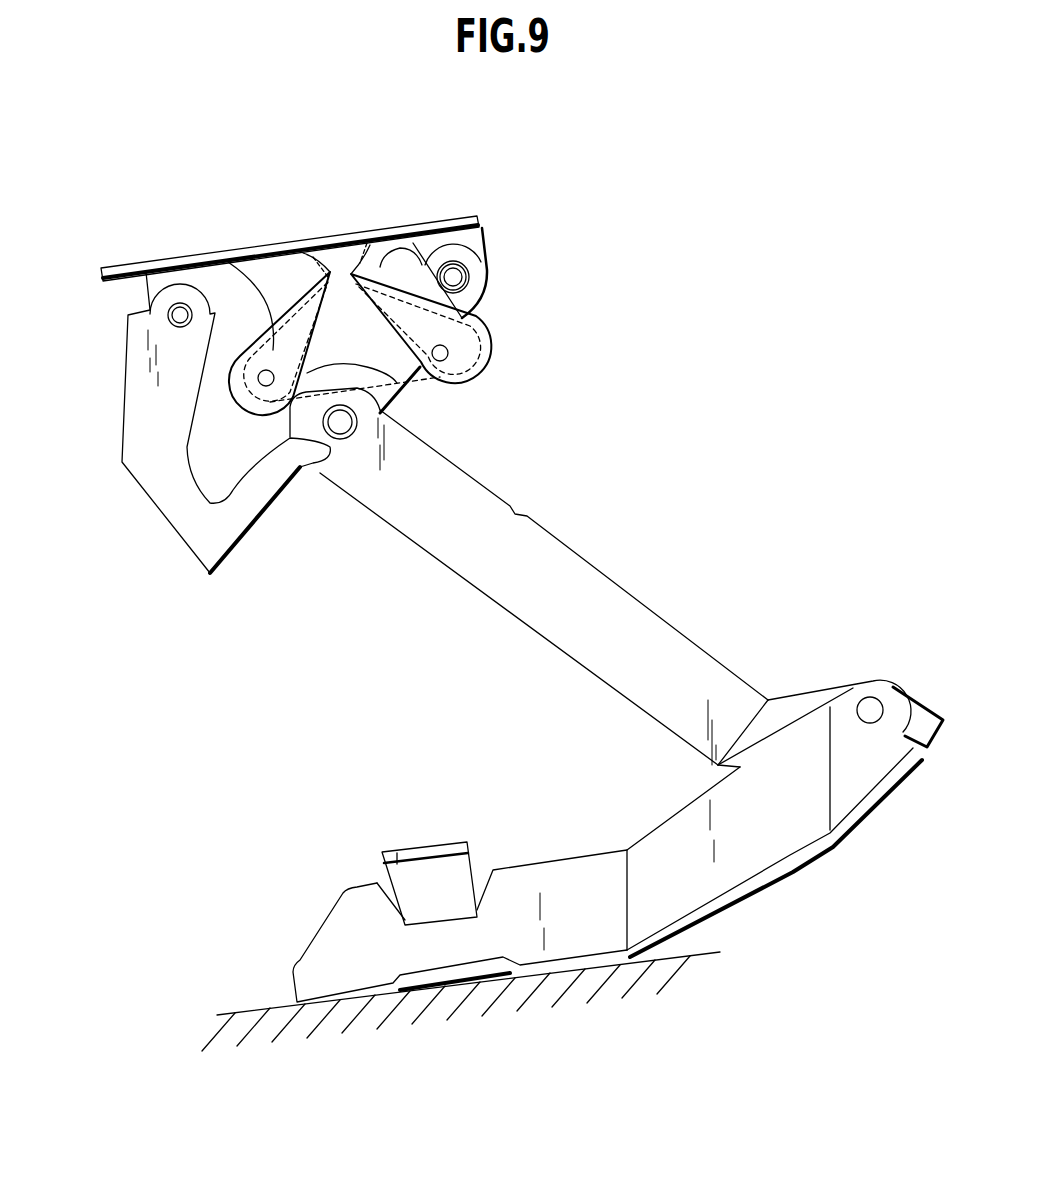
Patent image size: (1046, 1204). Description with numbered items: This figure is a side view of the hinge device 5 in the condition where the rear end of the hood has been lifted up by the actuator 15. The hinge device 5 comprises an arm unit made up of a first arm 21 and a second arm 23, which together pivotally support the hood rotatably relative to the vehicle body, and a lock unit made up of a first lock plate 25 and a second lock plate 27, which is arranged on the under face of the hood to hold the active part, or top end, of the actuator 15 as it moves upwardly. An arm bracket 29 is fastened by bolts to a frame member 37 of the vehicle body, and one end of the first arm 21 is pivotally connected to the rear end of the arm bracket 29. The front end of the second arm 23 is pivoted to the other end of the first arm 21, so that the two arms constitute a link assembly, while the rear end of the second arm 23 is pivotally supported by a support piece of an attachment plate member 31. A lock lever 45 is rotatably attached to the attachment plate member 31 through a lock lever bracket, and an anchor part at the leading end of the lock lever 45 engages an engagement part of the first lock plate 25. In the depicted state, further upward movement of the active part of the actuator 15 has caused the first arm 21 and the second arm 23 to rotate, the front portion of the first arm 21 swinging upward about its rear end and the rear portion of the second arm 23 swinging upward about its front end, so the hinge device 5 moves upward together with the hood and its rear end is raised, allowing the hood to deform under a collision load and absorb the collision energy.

The hinge device 5 is at (517, 248).
The actuator 15 is at (392, 386).
The first arm 21 is at (659, 620).
The second arm 23 is at (477, 277).
The first lock plate 25 is at (480, 363).
The second lock plate 27 is at (228, 258).
The arm bracket 29 is at (743, 909).
The attachment plate member 31 is at (447, 220).
The frame member 37 is at (255, 1013).
The lock lever 45 is at (140, 493).